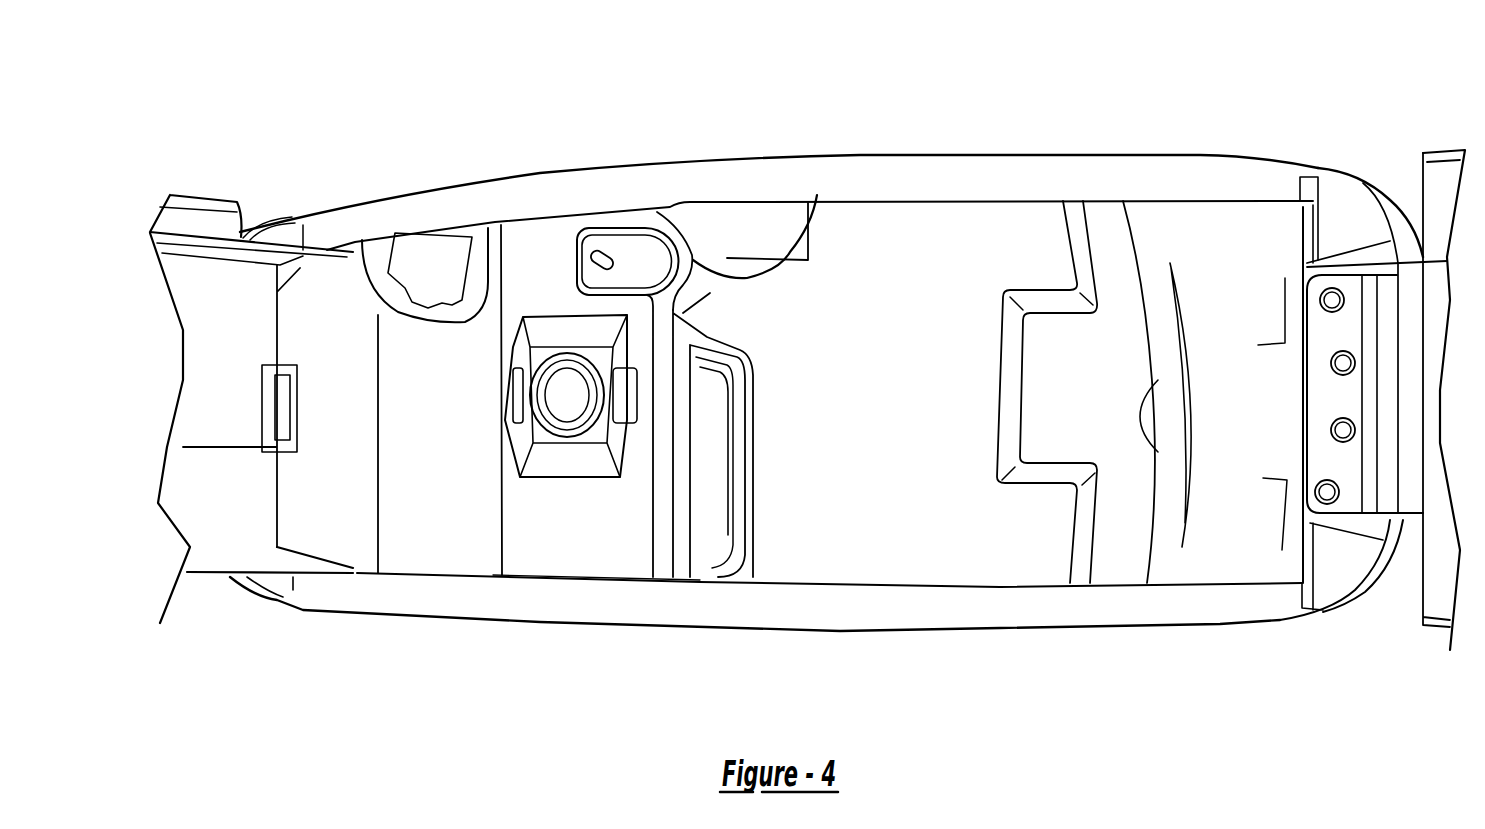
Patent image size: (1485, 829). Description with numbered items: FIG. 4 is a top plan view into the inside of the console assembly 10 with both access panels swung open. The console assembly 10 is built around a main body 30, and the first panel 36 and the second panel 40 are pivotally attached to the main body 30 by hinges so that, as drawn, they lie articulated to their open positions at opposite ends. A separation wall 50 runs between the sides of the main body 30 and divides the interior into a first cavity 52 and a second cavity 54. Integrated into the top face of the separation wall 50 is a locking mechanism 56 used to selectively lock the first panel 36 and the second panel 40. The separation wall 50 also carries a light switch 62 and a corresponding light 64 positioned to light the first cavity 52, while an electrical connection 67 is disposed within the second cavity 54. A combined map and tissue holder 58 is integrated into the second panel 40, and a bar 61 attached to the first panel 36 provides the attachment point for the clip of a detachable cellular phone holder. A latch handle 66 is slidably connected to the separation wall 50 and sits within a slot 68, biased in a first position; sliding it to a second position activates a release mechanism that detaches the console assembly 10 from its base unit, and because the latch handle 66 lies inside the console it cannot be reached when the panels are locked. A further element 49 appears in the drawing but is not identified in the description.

The console assembly 10 is at (1073, 130).
The main body 30 is at (683, 622).
The first panel 36 is at (203, 198).
The second panel 40 is at (1431, 632).
The floor panel 49 is at (593, 543).
The separation wall 50 is at (595, 355).
The first cavity 52 is at (985, 587).
The second cavity 54 is at (428, 555).
The locking mechanism 56 is at (570, 383).
The combined map and tissue holder 58 is at (1433, 333).
The bar 61 is at (298, 405).
The light switch 62 is at (613, 265).
The light 64 is at (673, 313).
The latch handle 66 is at (712, 534).
The electrical connection 67 is at (440, 253).
The slot 68 is at (735, 368).